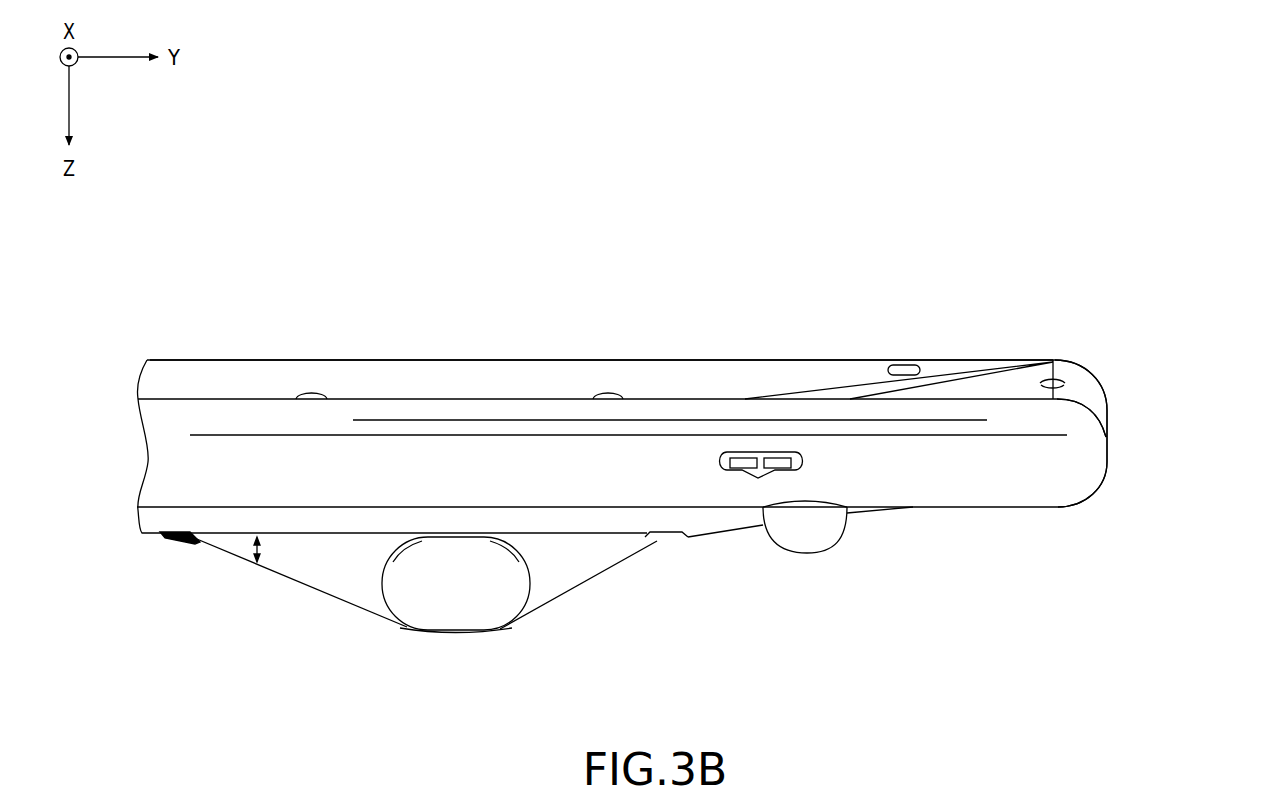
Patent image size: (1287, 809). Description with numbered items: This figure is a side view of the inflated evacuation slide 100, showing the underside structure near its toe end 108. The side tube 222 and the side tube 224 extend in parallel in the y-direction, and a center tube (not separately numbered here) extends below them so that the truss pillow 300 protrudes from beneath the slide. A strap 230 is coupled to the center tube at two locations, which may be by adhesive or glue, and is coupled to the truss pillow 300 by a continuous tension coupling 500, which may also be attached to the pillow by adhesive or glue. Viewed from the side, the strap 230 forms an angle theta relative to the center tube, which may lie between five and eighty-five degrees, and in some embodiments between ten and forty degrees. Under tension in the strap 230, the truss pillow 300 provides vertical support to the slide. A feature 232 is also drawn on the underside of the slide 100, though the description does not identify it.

The evacuation slide 100 is at (676, 429).
The toe end 108 is at (1133, 466).
The side tube 222 is at (980, 477).
The side tube 224 is at (515, 360).
The strap 230 is at (597, 575).
The dome 232 is at (817, 522).
The truss pillow 300 is at (438, 599).
The continuous tension coupling 500 is at (473, 632).